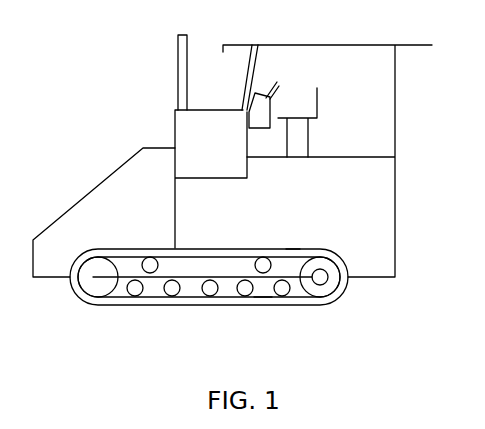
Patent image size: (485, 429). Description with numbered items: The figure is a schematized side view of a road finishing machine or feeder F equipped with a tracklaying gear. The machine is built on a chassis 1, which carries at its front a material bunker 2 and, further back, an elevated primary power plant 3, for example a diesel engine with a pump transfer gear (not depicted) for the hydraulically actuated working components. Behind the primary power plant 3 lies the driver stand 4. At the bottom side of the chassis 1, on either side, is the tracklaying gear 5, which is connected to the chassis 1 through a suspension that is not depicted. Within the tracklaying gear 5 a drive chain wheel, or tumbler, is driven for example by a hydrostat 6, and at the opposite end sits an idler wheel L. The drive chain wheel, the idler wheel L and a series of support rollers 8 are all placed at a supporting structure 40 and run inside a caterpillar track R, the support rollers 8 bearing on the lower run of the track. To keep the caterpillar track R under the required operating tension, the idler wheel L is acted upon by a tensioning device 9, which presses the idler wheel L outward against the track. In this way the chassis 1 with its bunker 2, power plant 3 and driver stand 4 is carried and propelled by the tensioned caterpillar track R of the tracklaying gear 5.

The chassis 1 is at (388, 258).
The front material bunker 2 is at (103, 180).
The primary power plant 3 is at (178, 126).
The driver stand 4 is at (385, 128).
The tracklaying gear 5 is at (238, 248).
The hydrostat 6 is at (345, 300).
The support rollers 8 is at (235, 302).
The tensioning device 9 is at (153, 278).
The supporting structure 40 is at (265, 292).
The idler wheel L is at (80, 305).
The caterpillar track R is at (293, 248).
The road finishing machine or feeder F is at (113, 113).